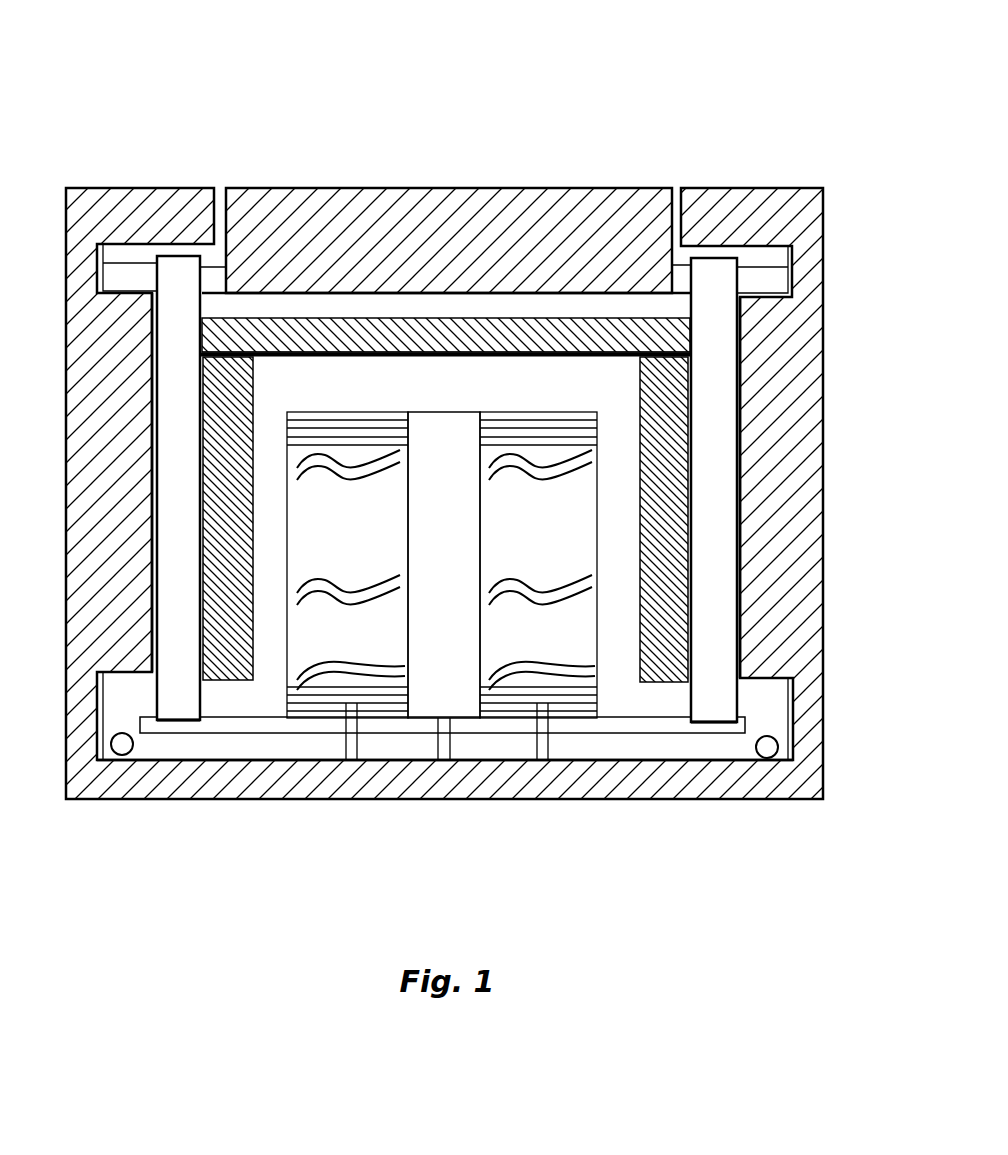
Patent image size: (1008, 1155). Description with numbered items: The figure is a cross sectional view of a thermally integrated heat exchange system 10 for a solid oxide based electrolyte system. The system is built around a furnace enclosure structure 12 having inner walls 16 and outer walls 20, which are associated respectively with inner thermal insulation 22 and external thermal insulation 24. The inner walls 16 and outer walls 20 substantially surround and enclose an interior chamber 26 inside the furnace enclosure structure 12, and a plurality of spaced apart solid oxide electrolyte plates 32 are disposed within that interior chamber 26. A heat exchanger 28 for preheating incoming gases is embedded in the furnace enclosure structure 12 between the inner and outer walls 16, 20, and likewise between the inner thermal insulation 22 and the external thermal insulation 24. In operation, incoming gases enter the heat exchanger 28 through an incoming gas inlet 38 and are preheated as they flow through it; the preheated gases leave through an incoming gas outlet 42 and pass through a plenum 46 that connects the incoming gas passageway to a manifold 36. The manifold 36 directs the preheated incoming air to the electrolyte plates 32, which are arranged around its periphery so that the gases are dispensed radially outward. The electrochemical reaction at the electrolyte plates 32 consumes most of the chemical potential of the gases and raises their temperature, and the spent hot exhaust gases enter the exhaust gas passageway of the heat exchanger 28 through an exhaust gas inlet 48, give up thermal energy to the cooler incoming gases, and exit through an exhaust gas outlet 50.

The thermally integrated heat exchange system 10 is at (553, 92).
The furnace enclosure structure 12 is at (418, 290).
The inner walls 16 is at (205, 303).
The outer walls 20 is at (152, 367).
The inner thermal insulation 22 is at (253, 402).
The external thermal insulation 24 is at (248, 188).
The interior chamber 26 is at (492, 395).
The heat exchanger 28 is at (173, 540).
The solid oxide electrolyte plates 32 is at (365, 410).
The manifold 36 is at (456, 688).
The incoming gas inlet 38 is at (120, 273).
The incoming gas outlet 42 is at (138, 697).
The plenum 46 is at (215, 800).
The exhaust gas inlet 48 is at (200, 700).
The exhaust gas outlet 50 is at (210, 272).